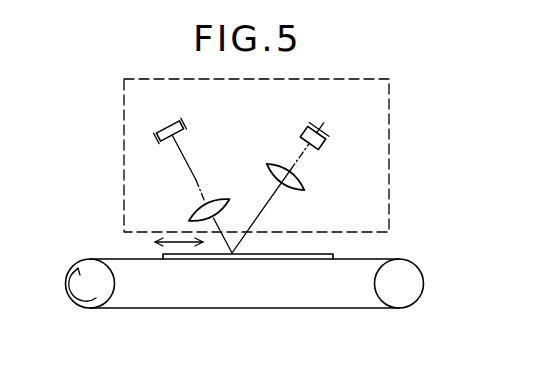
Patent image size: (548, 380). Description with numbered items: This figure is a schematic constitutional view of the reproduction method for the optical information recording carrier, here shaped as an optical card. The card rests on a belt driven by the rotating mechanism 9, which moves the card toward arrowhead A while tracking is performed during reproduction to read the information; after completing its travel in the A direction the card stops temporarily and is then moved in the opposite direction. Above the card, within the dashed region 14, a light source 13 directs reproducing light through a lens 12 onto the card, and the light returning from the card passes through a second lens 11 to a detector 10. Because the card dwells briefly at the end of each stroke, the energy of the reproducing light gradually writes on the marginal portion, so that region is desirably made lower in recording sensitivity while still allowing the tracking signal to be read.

The rotating mechanism 9 is at (76, 302).
The light detector 10 is at (326, 151).
The condensing lens 11 is at (305, 185).
The condensing lens 12 is at (215, 197).
The light source 13 is at (166, 124).
The optical sensor unit 14 is at (391, 193).
The direction of card movement A is at (178, 240).